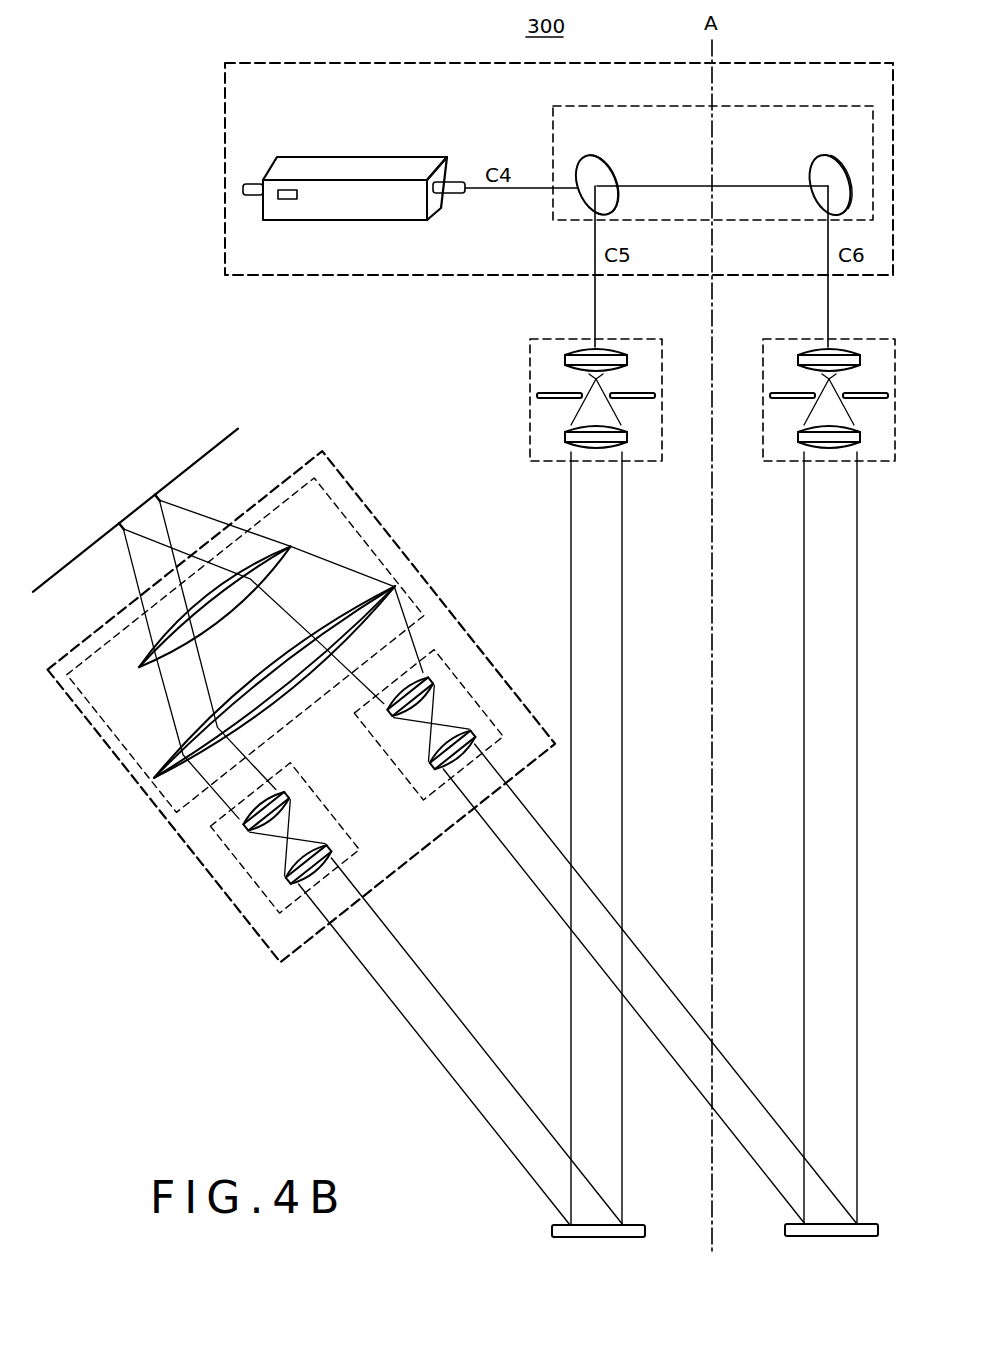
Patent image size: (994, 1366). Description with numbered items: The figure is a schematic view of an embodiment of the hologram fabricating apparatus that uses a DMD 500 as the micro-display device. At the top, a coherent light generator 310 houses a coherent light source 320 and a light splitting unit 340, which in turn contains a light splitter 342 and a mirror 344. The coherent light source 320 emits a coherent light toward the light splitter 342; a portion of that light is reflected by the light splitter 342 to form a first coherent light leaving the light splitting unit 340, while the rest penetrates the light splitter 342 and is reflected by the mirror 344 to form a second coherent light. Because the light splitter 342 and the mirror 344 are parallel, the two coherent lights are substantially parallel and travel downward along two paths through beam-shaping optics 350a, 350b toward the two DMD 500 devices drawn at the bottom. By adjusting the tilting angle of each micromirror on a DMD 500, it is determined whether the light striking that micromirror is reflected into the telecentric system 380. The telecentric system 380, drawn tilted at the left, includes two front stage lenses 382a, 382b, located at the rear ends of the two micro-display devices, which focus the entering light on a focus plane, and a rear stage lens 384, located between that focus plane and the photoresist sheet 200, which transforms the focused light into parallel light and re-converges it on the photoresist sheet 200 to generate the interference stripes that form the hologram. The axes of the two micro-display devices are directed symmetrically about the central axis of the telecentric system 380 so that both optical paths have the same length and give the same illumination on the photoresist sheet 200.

The photoresist sheet 200 is at (138, 516).
The coherent light generator 310 is at (797, 62).
The coherent light source 320 is at (362, 160).
The light splitting unit 340 is at (775, 106).
The light splitter 342 is at (612, 164).
The mirror 344 is at (806, 163).
The first beam shaping optics 350a is at (571, 338).
The second beam shaping optics 350b is at (804, 338).
The telecentric system 380 is at (394, 880).
The front stage lens 382a is at (410, 787).
The front stage lens 382b is at (314, 788).
The rear stage lens 384 is at (290, 725).
The DMD 500 is at (565, 1223).